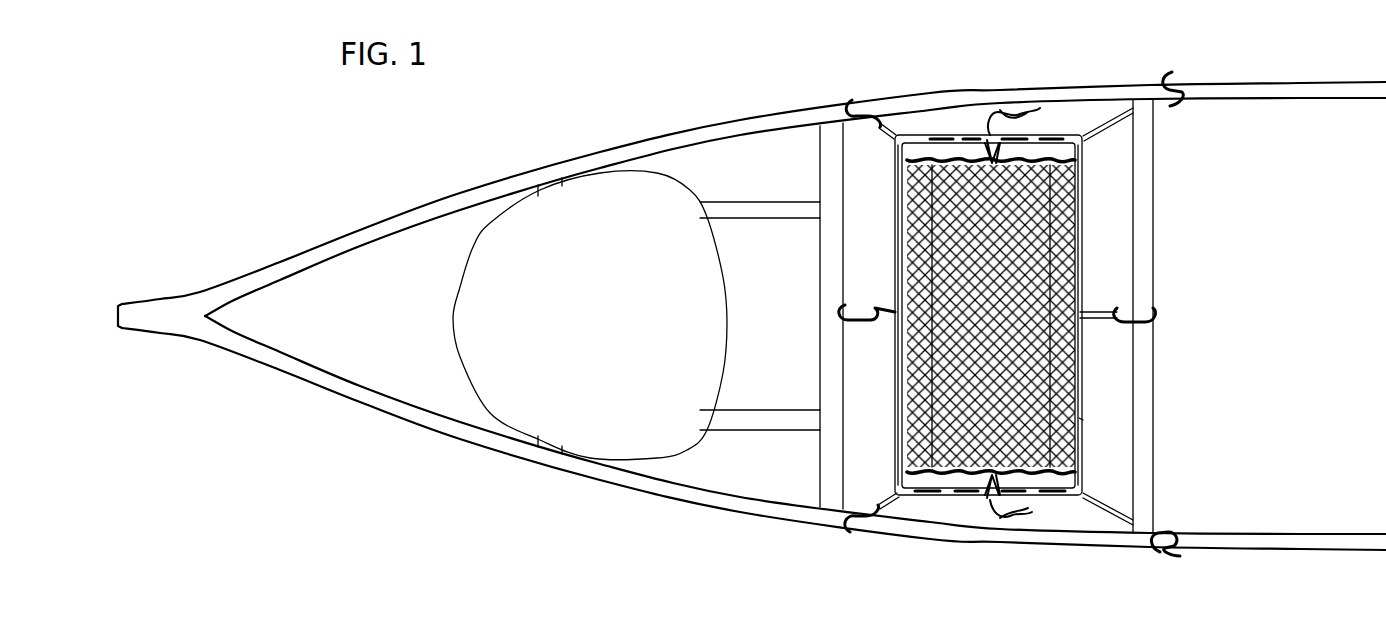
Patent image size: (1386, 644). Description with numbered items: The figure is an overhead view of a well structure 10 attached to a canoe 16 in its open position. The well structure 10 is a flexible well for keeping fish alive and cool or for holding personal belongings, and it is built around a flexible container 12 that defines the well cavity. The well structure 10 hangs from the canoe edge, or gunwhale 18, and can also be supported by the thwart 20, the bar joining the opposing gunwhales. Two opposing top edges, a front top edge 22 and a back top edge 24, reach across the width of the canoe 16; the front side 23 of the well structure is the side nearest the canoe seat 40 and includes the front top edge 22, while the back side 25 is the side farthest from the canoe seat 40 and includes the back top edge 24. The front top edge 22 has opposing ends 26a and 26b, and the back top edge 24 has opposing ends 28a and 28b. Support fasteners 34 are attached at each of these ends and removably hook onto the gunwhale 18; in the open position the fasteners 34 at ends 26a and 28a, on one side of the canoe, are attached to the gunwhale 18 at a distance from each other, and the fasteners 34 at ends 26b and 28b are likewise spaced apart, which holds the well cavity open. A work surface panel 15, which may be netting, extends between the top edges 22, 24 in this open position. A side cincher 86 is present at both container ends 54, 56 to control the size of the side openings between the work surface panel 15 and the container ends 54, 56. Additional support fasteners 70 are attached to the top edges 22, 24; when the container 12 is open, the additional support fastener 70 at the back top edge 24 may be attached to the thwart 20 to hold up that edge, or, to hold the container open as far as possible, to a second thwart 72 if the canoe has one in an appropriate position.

The well structure 10 is at (1022, 317).
The flexible container 12 is at (920, 136).
The work surface panel 15 is at (1040, 210).
The canoe 16 is at (1260, 84).
The gunwhale 18 is at (1208, 84).
The thwart 20 is at (1155, 224).
The front top edge 22 is at (895, 397).
The front side 23 is at (896, 238).
The back top edge 24 is at (1083, 420).
The back side 25 is at (1083, 350).
The end of front top edge 26a is at (892, 127).
The end of front top edge 26b is at (899, 505).
The end of back top edge 28a is at (1083, 136).
The end of back top edge 28b is at (1087, 500).
The support fastener 34 is at (850, 100).
The canoe seat 40 is at (522, 400).
The container end 54 is at (950, 136).
The container end 56 is at (1048, 496).
The additional support fastener 70 is at (1160, 316).
The second thwart 72 is at (826, 183).
The side cincher 86 is at (998, 113).